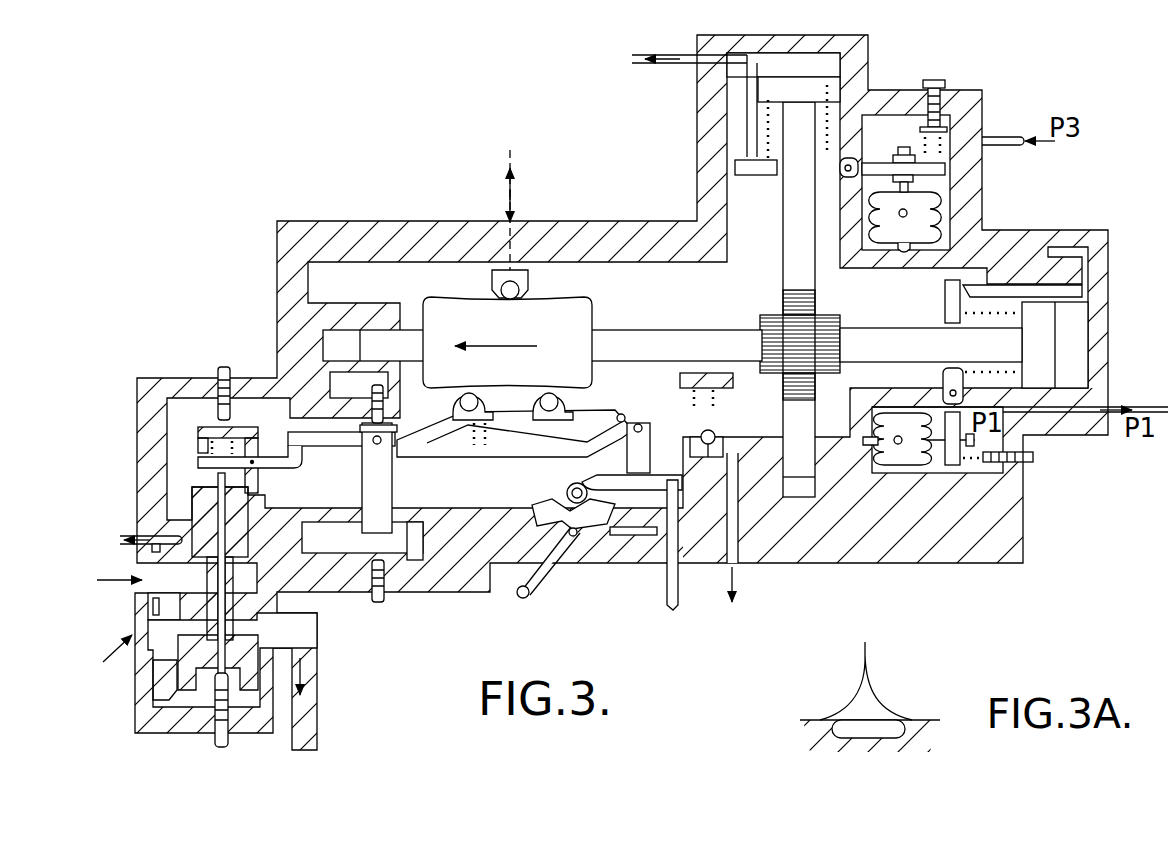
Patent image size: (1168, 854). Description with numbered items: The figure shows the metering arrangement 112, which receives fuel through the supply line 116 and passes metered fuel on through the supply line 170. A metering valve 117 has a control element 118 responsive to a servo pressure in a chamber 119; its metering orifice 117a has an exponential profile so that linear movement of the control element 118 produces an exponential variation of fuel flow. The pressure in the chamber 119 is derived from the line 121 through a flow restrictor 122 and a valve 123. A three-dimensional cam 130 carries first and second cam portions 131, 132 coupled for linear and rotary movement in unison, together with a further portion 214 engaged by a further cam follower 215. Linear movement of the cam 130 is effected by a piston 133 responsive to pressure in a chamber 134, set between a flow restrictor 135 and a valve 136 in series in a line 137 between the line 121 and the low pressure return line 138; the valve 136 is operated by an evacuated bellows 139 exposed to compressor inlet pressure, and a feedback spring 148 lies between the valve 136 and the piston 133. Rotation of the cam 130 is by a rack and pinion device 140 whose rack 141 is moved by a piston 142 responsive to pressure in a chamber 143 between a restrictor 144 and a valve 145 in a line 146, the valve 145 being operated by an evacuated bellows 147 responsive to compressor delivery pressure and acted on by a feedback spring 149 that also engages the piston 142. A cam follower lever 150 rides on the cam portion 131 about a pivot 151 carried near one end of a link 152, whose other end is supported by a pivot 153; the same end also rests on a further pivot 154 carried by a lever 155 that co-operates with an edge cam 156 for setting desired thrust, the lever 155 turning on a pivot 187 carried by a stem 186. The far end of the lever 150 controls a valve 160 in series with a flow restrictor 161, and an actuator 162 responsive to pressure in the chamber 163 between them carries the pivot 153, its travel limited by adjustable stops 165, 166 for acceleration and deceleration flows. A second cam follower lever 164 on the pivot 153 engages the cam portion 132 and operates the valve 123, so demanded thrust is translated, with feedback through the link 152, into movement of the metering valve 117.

In FIG. 3, the metering arrangement 112 is at (845, 567).
In FIG. 3, the supply line 116 is at (115, 584).
In FIG. 3, the metering valve 117 is at (106, 659).
In FIG. 3, the metering orifice 117a is at (259, 625).
In FIG. 3A, the metering orifice 117a is at (882, 683).
In FIG. 3, the control element 118 is at (200, 507).
In FIG. 3A, the control element 118 is at (920, 722).
In FIG. 3, the chamber 119 is at (245, 702).
In FIG. 3, the line 121 is at (111, 535).
In FIG. 3, the flow restrictor 122 is at (168, 703).
In FIG. 3, the valve 123 is at (218, 477).
In FIG. 3, the three-dimensional cam 130 is at (551, 290).
In FIG. 3, the first cam portion 131 is at (567, 322).
In FIG. 3, the second cam portion 132 is at (433, 310).
In FIG. 3, the piston 133 is at (1040, 350).
In FIG. 3, the chamber 134 is at (1072, 313).
In FIG. 3, the flow restrictor 135 is at (1090, 268).
In FIG. 3, the valve 136 is at (950, 285).
In FIG. 3, the line 137 is at (1062, 248).
In FIG. 3, the low pressure return line 138 is at (733, 542).
In FIG. 3, the evacuated bellows 139 is at (905, 447).
In FIG. 3, the rack and pinion device 140 is at (776, 310).
In FIG. 3, the rack 141 is at (797, 210).
In FIG. 3, the piston 142 is at (815, 90).
In FIG. 3, the chamber 143 is at (812, 63).
In FIG. 3, the restrictor 144 is at (730, 60).
In FIG. 3, the valve 145 is at (745, 155).
In FIG. 3, the line 146 is at (700, 50).
In FIG. 3, the evacuated bellows 147 is at (905, 213).
In FIG. 3, the feedback spring 148 is at (990, 315).
In FIG. 3, the feedback spring 149 is at (767, 133).
In FIG. 3, the cam follower lever 150 is at (545, 422).
In FIG. 3, the pivot 151 is at (619, 413).
In FIG. 3, the link 152 is at (495, 455).
In FIG. 3, the pivot 153 is at (380, 444).
In FIG. 3, the further pivot 154 is at (640, 423).
In FIG. 3, the lever 155 is at (600, 480).
In FIG. 3, the edge cam 156 is at (590, 517).
In FIG. 3, the valve 160 is at (714, 445).
In FIG. 3, the flow restrictor 161 is at (472, 592).
In FIG. 3, the actuator 162 is at (362, 542).
In FIG. 3, the chamber 163 is at (395, 558).
In FIG. 3, the second cam follower lever 164 is at (333, 440).
In FIG. 3, the adjustable stop 165 is at (712, 398).
In FIG. 3, the adjustable stop 166 is at (386, 406).
In FIG. 3, the supply line 170 is at (297, 714).
In FIG. 3, the stem 186 is at (672, 585).
In FIG. 3, the pivot 187 is at (672, 478).
In FIG. 3, the further portion 214 is at (512, 313).
In FIG. 3, the further cam follower 215 is at (505, 278).